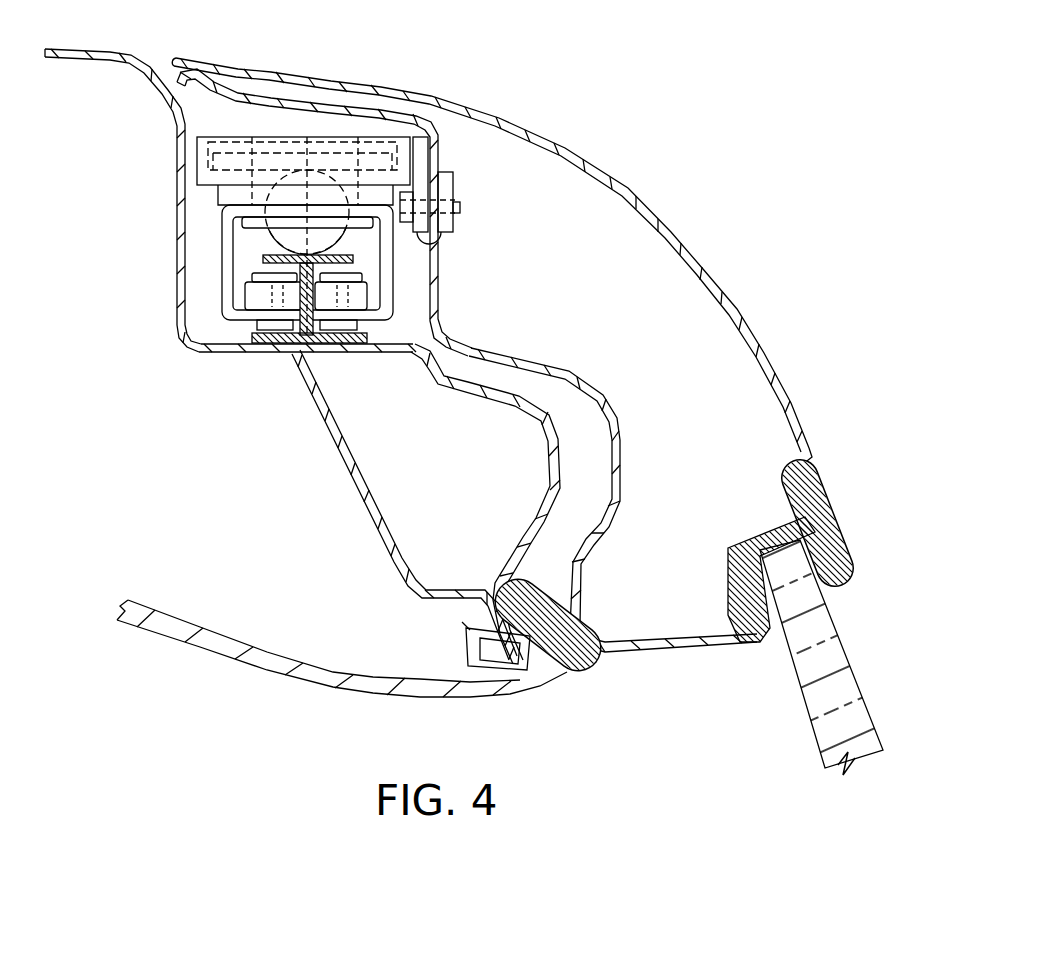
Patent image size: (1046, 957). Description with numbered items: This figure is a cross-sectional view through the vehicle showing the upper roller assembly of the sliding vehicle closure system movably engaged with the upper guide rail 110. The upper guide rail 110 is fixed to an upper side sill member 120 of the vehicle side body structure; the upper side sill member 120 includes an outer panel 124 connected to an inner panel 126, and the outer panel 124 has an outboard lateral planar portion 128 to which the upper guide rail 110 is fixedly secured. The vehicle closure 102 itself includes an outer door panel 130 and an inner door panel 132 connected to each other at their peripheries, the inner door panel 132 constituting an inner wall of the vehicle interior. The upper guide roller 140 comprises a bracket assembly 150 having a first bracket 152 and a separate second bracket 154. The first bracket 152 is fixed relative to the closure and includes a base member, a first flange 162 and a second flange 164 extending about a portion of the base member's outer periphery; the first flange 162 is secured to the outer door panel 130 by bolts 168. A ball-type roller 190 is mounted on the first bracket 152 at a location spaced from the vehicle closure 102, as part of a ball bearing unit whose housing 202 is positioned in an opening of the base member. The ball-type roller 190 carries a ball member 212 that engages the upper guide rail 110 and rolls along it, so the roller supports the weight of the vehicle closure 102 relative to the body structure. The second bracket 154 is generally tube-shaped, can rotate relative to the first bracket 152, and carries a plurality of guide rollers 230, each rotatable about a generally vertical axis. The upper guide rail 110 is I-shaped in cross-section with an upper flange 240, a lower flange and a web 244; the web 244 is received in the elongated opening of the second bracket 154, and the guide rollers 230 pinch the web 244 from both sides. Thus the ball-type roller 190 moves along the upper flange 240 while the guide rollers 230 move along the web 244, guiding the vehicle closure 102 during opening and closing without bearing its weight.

The vehicle closure 102 is at (723, 273).
The upper guide rail 110 is at (327, 350).
The upper side sill member 120 is at (313, 410).
The outer panel 124 is at (557, 432).
The inner panel 126 is at (363, 508).
The outboard lateral planar portion 128 is at (380, 352).
The outer door panel 130 is at (738, 305).
The inner door panel 132 is at (622, 473).
The upper guide roller 140 is at (237, 125).
The bracket assembly 150 is at (190, 147).
The first bracket 152 is at (203, 173).
The second bracket 154 is at (222, 280).
The first flange 162 is at (440, 243).
The second flange 164 is at (405, 140).
The bolts 168 is at (460, 207).
The ball-type roller 190 is at (243, 238).
The housing 202 is at (220, 193).
The ball member 212 is at (322, 252).
The guide rollers 230 is at (250, 297).
The upper flange 240 is at (263, 258).
The web 244 is at (287, 340).